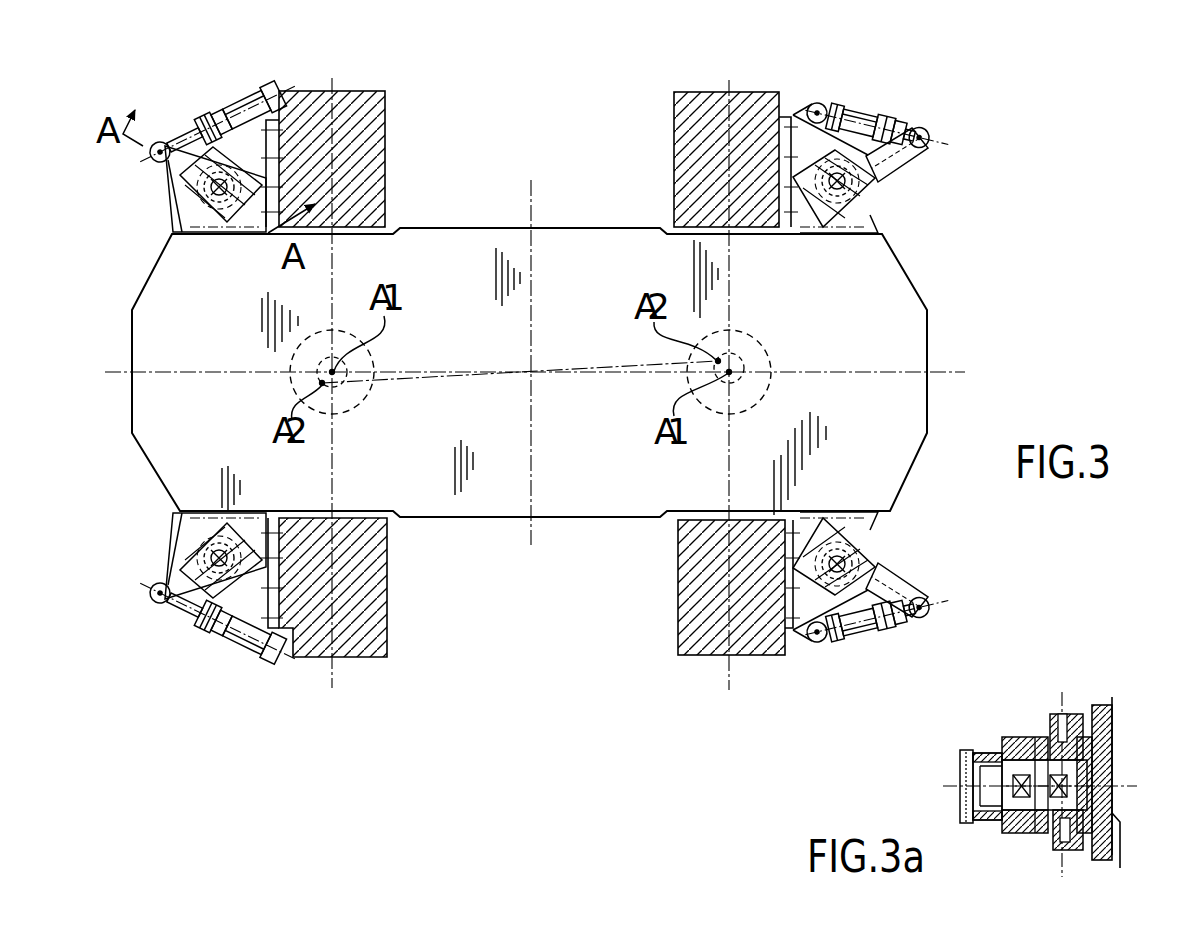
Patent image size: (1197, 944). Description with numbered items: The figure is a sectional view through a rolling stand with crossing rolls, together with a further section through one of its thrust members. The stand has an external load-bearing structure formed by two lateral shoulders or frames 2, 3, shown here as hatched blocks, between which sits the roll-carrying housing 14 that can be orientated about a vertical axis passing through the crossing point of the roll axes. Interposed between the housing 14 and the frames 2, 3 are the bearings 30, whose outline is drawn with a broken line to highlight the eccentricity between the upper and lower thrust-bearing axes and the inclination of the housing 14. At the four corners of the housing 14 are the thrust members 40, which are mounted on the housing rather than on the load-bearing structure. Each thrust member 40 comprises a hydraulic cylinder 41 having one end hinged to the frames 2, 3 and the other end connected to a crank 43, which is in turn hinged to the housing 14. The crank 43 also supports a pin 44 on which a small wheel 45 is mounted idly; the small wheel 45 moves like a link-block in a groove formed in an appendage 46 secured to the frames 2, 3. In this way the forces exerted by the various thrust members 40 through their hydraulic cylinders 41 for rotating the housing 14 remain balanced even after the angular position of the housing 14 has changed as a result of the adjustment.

In FIG. 3, the lateral shoulder or frame 2 is at (682, 147).
In FIG. 3, the lateral shoulder or frame 3 is at (372, 137).
In FIG. 3, the housing 14 is at (898, 295).
In FIG. 3A, the housing 14 is at (1106, 752).
In FIG. 3, the bearings 30 is at (362, 400).
In FIG. 3, the thrust members 40 is at (594, 436).
In FIG. 3, the actuating cylinder 41 is at (248, 104).
In FIG. 3, the crank 43 is at (180, 193).
In FIG. 3A, the crank 43 is at (1003, 828).
In FIG. 3, the pin 44 is at (220, 200).
In FIG. 3A, the pin 44 is at (1020, 755).
In FIG. 3A, the small wheel 45 is at (1043, 835).
In FIG. 3A, the appendage 46 is at (1085, 788).